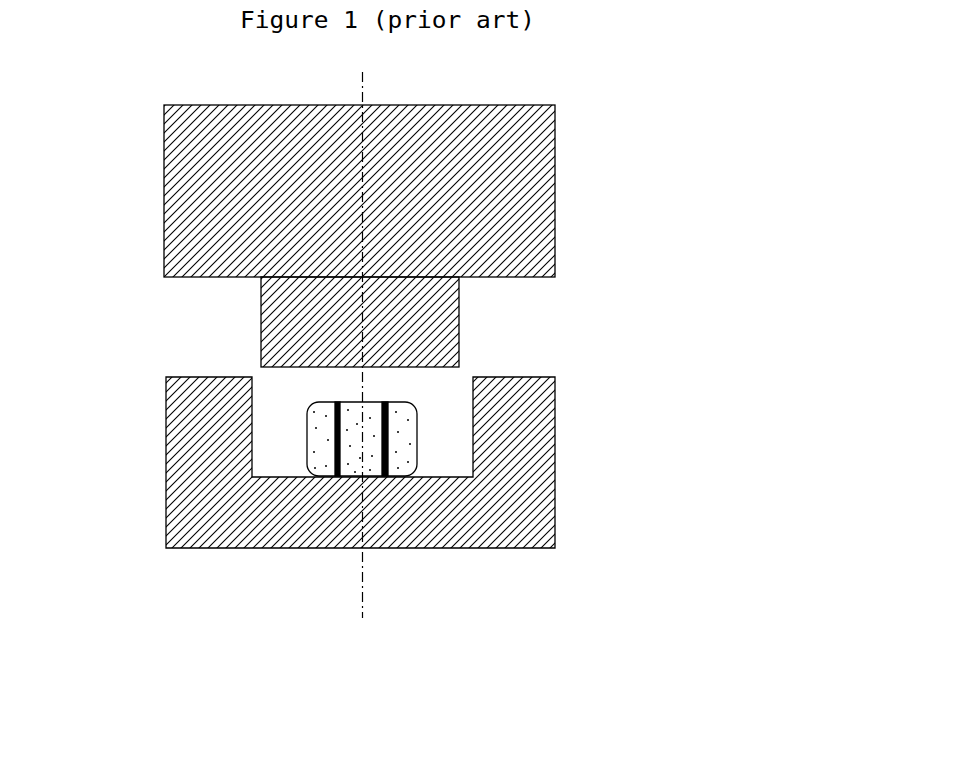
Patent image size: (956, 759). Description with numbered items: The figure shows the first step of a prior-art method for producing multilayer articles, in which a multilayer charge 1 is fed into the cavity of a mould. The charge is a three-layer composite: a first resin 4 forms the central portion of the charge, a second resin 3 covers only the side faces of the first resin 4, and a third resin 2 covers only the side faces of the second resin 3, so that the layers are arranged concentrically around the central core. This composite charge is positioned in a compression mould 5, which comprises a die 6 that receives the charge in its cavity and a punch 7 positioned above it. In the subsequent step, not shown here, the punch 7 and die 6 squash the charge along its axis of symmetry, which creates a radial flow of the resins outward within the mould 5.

The pressed compact (green body) 1 is at (421, 442).
The third resin 2 is at (327, 455).
The second resin 3 is at (337, 443).
The first resin 4 is at (355, 413).
The compression mould 5 is at (600, 290).
The die 6 is at (502, 518).
The punch 7 is at (485, 224).